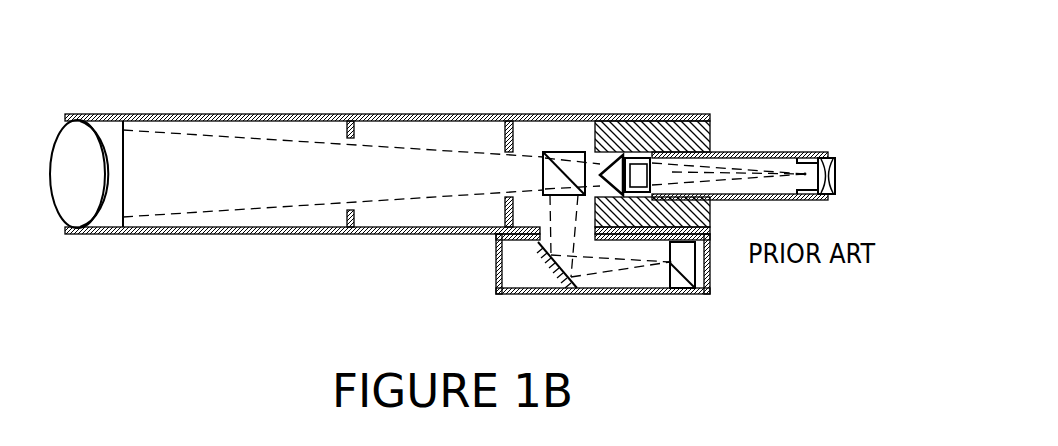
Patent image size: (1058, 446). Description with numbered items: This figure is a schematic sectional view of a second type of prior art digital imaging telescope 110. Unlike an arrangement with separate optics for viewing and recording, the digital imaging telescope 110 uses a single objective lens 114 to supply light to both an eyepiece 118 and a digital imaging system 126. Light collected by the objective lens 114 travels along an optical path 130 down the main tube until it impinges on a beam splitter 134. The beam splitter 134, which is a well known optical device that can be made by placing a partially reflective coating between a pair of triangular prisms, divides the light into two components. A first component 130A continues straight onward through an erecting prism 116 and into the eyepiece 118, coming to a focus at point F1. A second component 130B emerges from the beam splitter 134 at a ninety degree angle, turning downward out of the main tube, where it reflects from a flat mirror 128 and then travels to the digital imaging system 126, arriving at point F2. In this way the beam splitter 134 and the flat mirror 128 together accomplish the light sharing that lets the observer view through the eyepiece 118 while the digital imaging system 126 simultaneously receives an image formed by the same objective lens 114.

The digital imaging telescope 110 is at (380, 62).
The objective lens 114 is at (77, 140).
The erecting prism 116 is at (620, 154).
The eyepiece 118 is at (846, 130).
The digital imaging system 126 is at (682, 263).
The flat mirror 128 is at (548, 283).
The optical path 130 is at (317, 205).
The first component 130A is at (733, 165).
The second component 130B is at (612, 270).
The beam splitter 134 is at (553, 157).
The point F1 is at (813, 173).
The point F2 is at (683, 288).